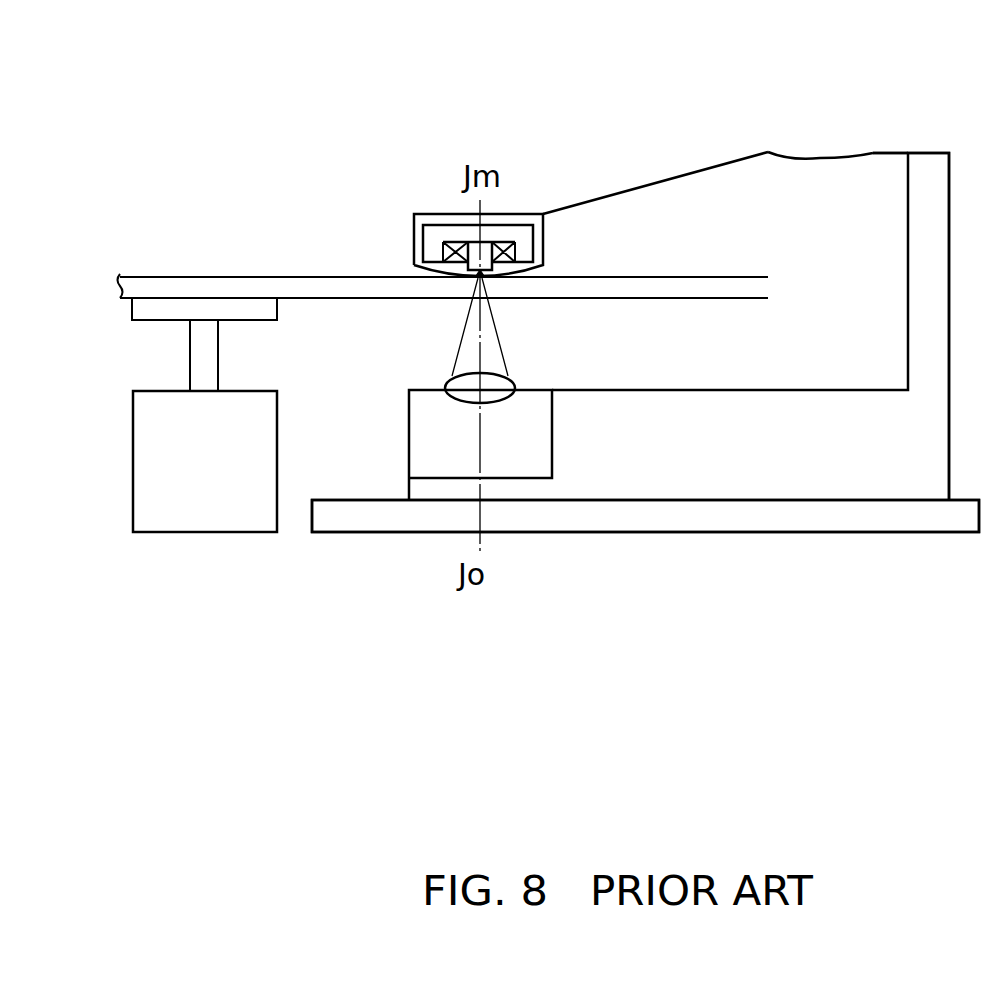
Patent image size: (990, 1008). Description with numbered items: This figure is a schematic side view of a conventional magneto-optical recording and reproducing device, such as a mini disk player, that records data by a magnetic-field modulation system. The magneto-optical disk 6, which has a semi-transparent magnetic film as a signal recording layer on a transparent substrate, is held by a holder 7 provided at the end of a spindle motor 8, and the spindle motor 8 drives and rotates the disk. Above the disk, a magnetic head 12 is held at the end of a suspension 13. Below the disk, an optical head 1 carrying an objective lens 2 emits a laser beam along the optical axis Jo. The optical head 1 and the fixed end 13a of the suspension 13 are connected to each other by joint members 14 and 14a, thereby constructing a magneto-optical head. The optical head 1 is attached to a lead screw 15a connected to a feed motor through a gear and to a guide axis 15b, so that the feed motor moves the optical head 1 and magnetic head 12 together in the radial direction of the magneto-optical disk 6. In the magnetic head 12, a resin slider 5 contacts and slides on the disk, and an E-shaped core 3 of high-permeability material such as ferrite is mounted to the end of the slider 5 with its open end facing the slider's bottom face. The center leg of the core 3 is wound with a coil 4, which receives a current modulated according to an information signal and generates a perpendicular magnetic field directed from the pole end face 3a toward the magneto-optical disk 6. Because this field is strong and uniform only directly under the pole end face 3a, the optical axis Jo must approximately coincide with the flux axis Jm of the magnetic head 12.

The optical head 1 is at (426, 426).
The objective lens 2 is at (500, 386).
The E-shaped core 3 is at (436, 233).
The pole end face 3a is at (485, 279).
The coil 4 is at (505, 232).
The slider 5 is at (411, 212).
The magneto-optical disk 6 is at (285, 292).
The holder 7 is at (153, 310).
The spindle motor 8 is at (218, 515).
The magnetic head 12 is at (650, 185).
The suspension 13 is at (808, 155).
The fixed end 13a is at (880, 155).
The joint member 14 is at (752, 410).
The joint member 14a is at (885, 153).
The lead screw 15a is at (683, 517).
The guide axis 15b is at (645, 561).